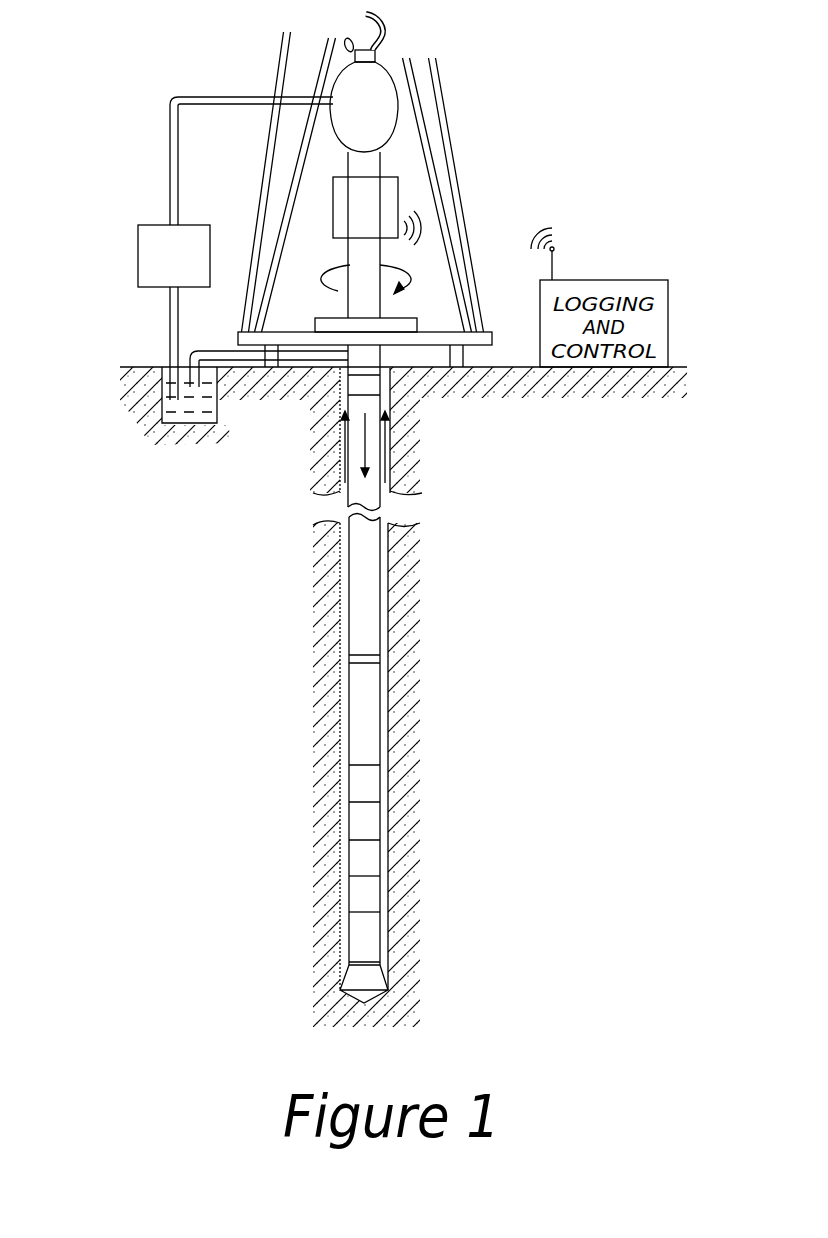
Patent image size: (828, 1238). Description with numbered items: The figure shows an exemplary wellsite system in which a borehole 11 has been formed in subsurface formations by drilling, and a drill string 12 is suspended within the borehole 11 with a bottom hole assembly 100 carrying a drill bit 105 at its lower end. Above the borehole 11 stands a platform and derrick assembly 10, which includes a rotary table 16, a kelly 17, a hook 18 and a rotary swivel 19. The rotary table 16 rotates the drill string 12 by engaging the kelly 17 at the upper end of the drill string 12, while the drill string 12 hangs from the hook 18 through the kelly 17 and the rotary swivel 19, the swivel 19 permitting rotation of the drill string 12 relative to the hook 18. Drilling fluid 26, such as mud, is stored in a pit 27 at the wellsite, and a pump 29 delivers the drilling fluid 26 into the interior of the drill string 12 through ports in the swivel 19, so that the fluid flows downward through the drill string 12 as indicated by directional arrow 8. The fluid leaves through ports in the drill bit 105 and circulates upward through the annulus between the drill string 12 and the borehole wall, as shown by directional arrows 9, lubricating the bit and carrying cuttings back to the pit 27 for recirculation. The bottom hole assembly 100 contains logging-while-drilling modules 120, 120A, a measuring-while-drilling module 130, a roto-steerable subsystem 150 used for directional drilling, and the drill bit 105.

The directional arrow 8 is at (362, 456).
The directional arrows 9 is at (343, 437).
The platform and derrick assembly 10 is at (476, 79).
The borehole 11 is at (386, 370).
The drill string 12 is at (358, 368).
The rotary table 16 is at (406, 320).
The kelly 17 is at (356, 311).
The hook 18 is at (363, 14).
The rotary swivel 19 is at (348, 138).
The drilling fluid 26 is at (190, 425).
The pit 27 is at (165, 372).
The pump 29 is at (138, 257).
The bottom hole assembly 100 is at (353, 765).
The drill bit 105 is at (404, 984).
The logging-while-drilling module 120 is at (372, 822).
The logging-while-drilling module 120A is at (372, 897).
The measuring-while-drilling module 130 is at (372, 862).
The roto-steerable subsystem 150 is at (372, 936).